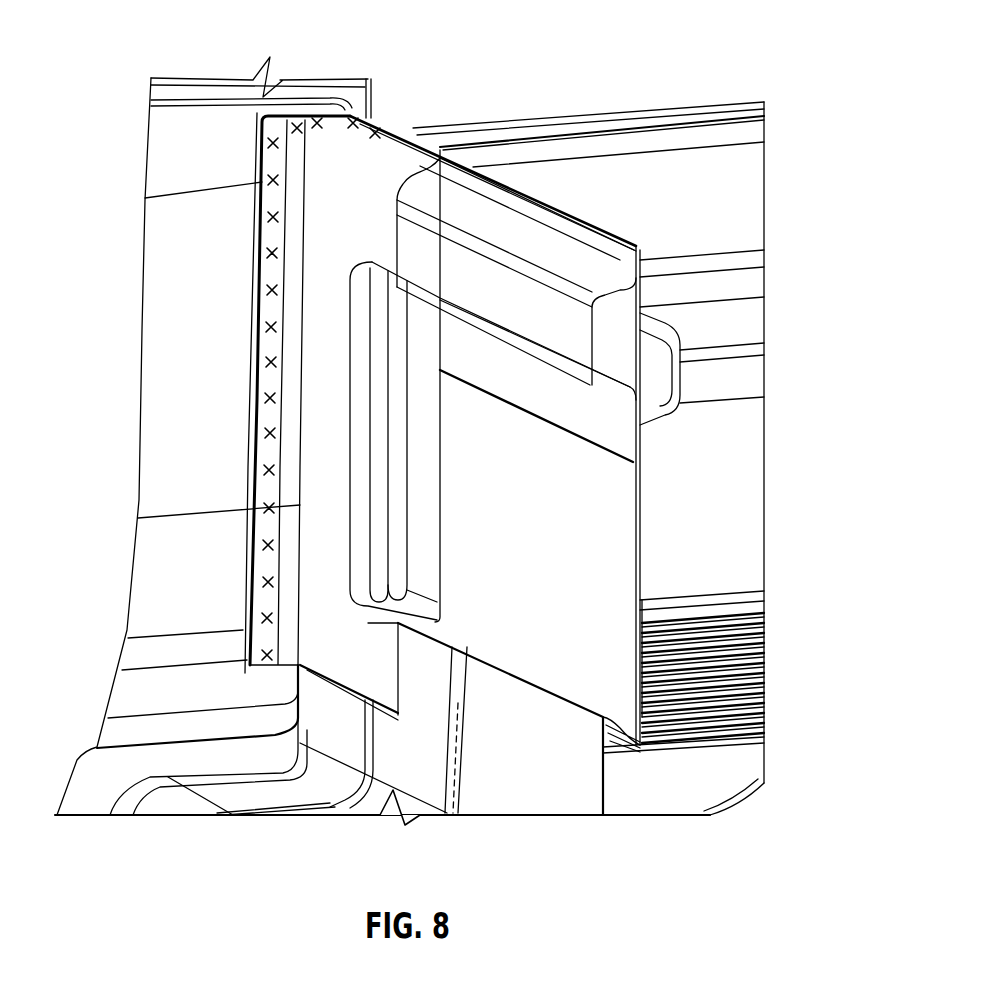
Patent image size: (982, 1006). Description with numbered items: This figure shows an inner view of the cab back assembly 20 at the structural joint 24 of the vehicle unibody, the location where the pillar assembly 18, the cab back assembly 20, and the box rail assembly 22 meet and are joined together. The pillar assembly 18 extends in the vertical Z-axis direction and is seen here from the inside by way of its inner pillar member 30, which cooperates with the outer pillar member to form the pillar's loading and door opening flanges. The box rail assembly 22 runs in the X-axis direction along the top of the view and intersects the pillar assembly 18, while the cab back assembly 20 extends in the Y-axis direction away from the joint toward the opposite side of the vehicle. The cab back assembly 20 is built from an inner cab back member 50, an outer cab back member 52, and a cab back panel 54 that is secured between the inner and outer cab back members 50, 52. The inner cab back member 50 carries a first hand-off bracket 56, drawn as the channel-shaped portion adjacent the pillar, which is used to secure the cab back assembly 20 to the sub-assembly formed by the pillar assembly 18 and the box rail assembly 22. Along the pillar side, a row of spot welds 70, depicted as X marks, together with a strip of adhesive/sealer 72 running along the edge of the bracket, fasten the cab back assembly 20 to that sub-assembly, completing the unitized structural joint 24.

The pillar assembly 18 is at (138, 153).
The cab back assembly 20 is at (527, 184).
The box rail assembly 22 is at (708, 103).
The structural joint 24 is at (382, 112).
The inner pillar member 30 is at (167, 270).
The inner cab back member 50 is at (577, 417).
The outer cab back member 52 is at (680, 373).
The cab back panel 54 is at (603, 513).
The first hand-off bracket 56 is at (330, 552).
The spot welds 70 is at (270, 143).
The adhesive/sealer 72 is at (284, 110).